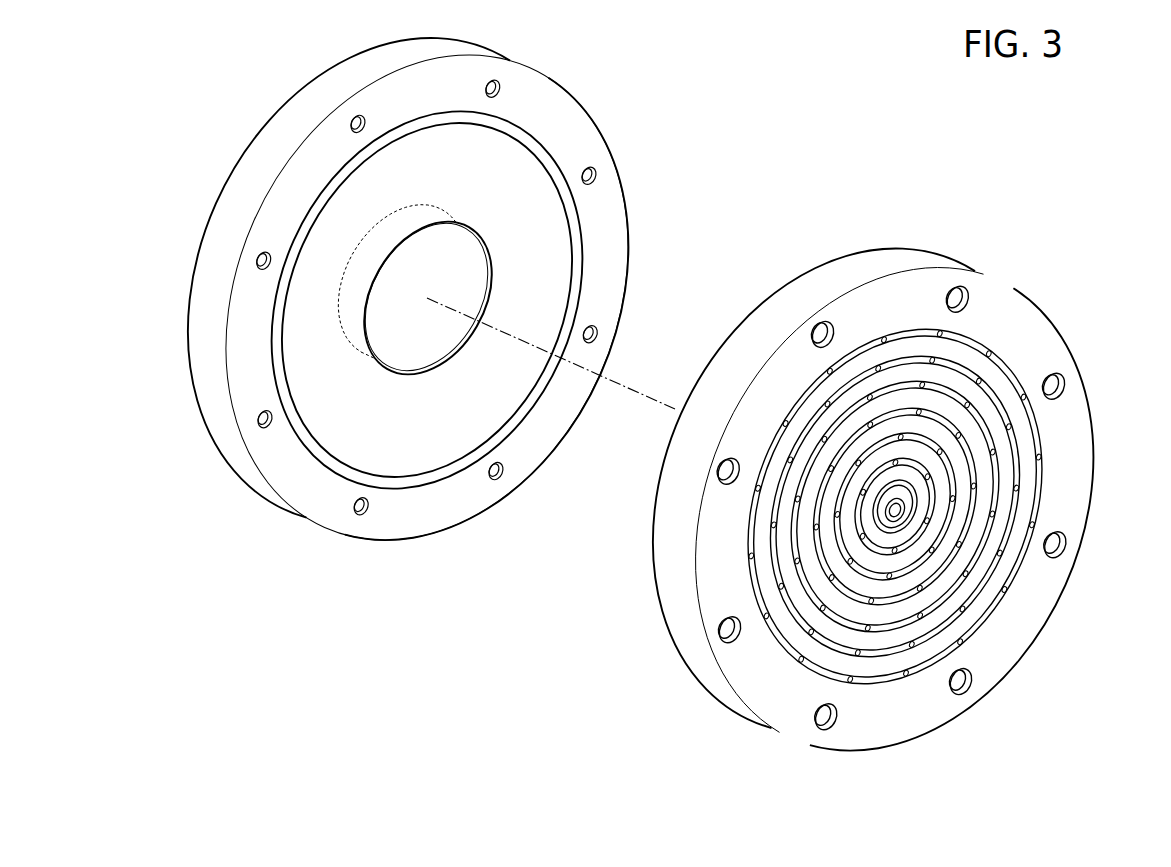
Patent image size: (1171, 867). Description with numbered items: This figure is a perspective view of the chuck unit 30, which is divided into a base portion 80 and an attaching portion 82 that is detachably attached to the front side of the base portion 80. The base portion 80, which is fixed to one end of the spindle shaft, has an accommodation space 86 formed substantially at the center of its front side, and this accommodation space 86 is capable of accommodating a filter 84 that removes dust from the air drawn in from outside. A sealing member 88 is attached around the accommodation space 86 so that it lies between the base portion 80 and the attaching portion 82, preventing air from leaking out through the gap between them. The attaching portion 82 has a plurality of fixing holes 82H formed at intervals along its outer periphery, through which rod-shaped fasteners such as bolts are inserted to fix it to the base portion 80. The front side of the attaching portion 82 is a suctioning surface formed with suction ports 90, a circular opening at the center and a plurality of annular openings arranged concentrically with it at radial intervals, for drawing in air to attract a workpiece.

The chuck unit 30 is at (1136, 142).
The base portion 80 is at (568, 112).
The attaching portion 82 is at (1040, 328).
The fixing holes 82H is at (1066, 548).
The filter 84 is at (437, 347).
The accommodation space 86 is at (356, 353).
The sealing member 88 is at (565, 158).
The suction ports 90 is at (923, 686).